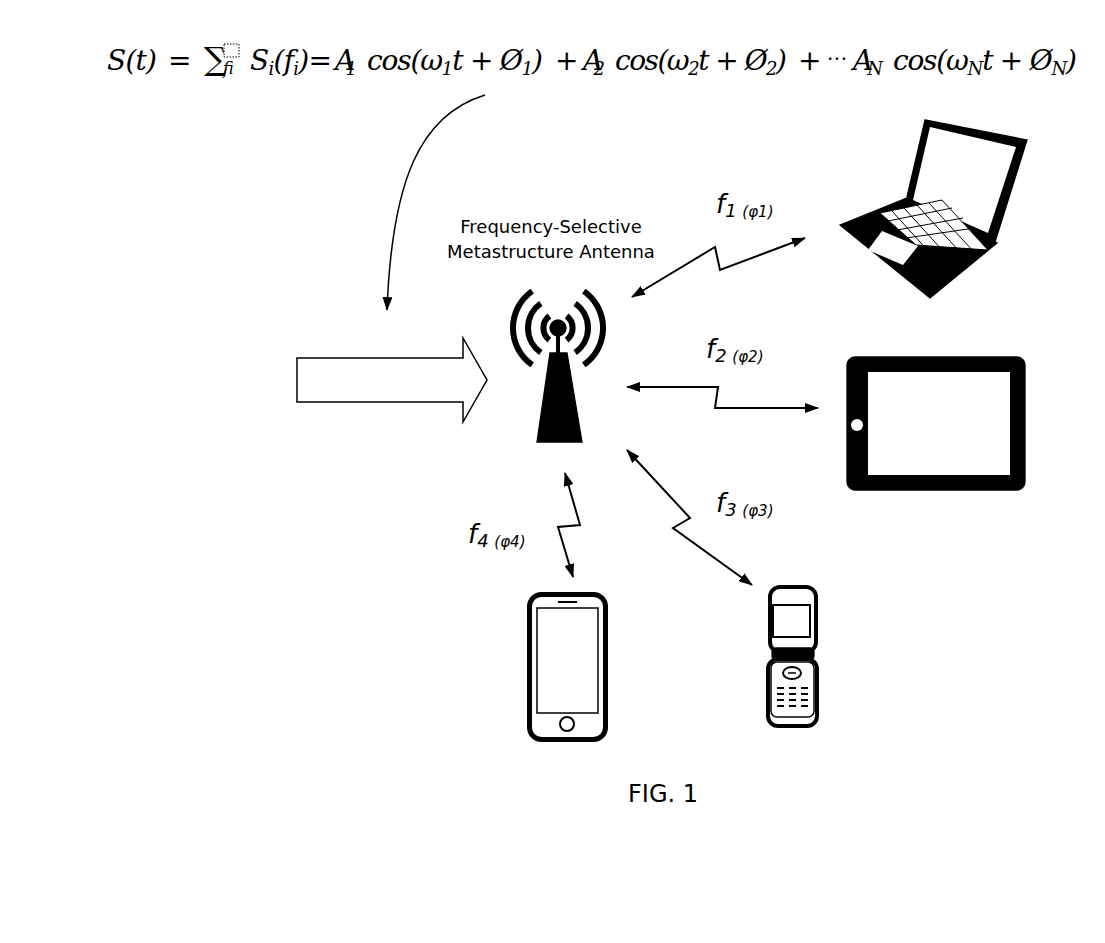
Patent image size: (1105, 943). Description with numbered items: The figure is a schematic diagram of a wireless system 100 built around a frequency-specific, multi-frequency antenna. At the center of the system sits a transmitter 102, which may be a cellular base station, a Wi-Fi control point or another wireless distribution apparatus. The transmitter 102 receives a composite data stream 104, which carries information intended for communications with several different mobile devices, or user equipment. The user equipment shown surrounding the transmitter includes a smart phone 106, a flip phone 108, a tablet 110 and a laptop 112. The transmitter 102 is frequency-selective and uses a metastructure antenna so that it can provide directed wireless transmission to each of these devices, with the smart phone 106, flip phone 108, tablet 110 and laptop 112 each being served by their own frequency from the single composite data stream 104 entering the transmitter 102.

The wireless system 100 is at (300, 162).
The transmitter 102 is at (543, 390).
The composite data stream 104 is at (352, 358).
The smart phone 106 is at (527, 652).
The flip phone 108 is at (765, 680).
The tablet 110 is at (1023, 427).
The laptop 112 is at (1012, 200).